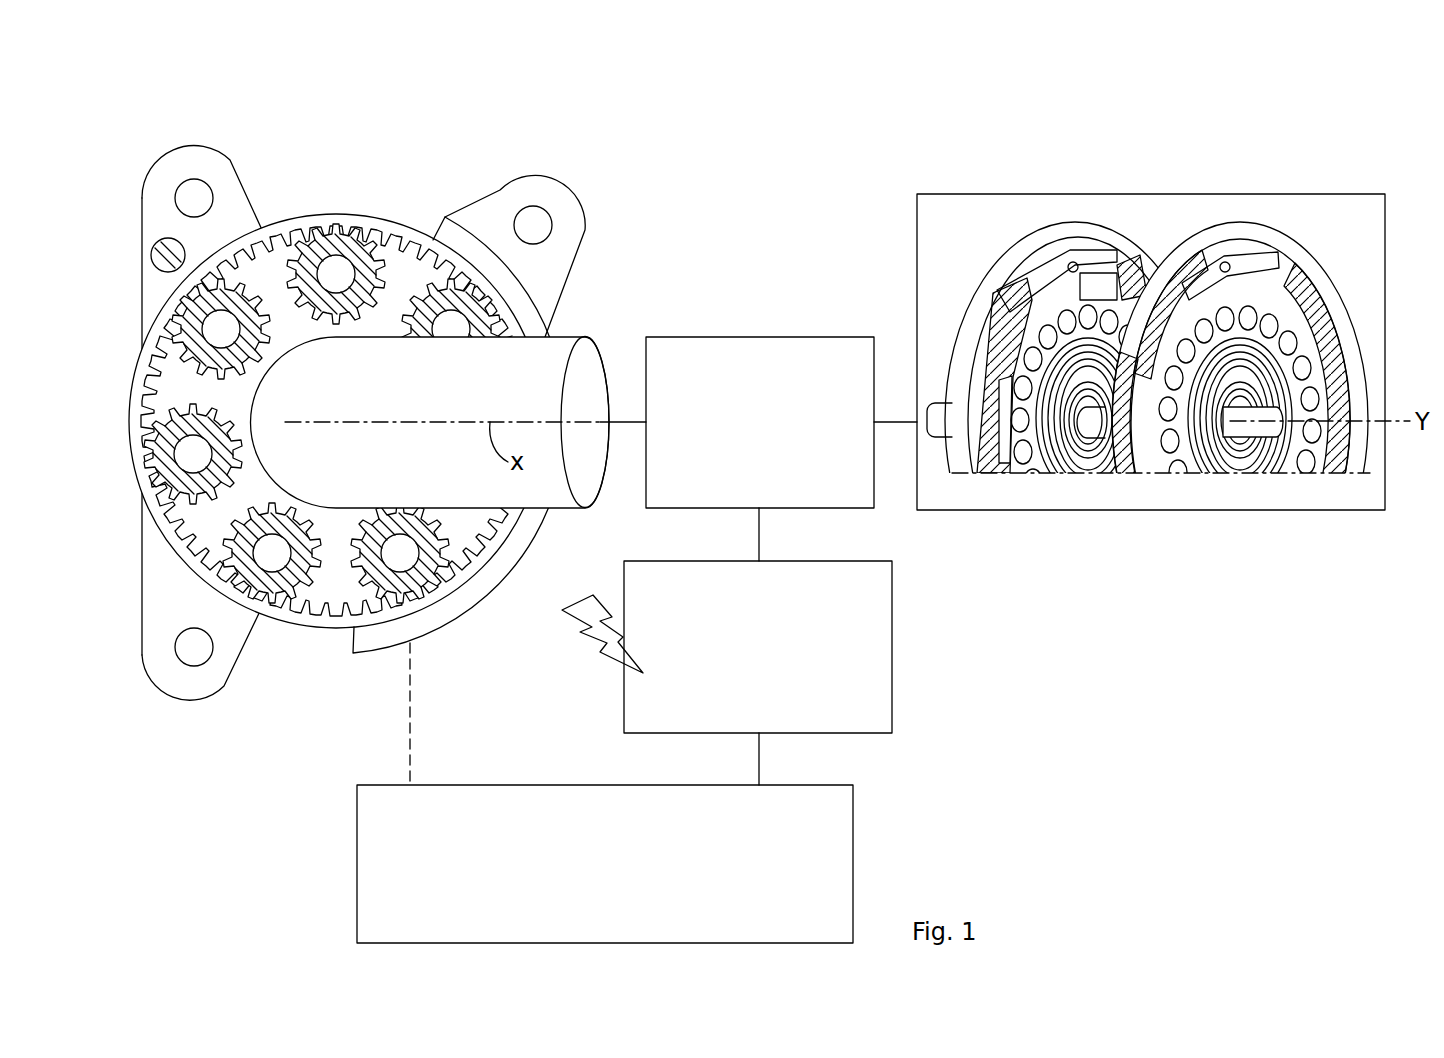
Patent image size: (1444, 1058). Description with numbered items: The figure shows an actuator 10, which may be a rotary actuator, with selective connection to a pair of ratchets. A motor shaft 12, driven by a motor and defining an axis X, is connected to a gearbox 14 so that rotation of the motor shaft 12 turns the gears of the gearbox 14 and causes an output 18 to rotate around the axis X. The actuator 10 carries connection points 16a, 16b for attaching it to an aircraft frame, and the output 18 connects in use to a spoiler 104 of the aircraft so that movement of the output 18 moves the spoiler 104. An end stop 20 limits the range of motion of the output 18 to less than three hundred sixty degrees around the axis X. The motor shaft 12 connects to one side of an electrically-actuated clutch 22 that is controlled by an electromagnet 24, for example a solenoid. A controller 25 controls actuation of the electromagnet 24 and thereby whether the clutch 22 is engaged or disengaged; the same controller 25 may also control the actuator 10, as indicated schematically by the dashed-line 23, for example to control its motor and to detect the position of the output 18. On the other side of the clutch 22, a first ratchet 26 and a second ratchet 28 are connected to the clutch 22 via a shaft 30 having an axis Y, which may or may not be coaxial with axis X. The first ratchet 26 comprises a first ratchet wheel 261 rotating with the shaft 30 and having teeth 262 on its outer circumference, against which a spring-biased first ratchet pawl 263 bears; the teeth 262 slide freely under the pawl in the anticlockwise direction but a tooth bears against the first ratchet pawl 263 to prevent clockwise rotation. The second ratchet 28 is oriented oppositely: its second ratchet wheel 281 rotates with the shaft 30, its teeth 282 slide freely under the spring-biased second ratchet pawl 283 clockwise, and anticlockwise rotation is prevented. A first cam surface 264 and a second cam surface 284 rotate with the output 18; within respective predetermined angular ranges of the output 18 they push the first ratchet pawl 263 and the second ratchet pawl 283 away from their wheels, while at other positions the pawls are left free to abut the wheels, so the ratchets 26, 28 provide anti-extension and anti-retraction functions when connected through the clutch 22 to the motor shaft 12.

The actuator 10 is at (175, 100).
The motor shaft 12 is at (353, 480).
The gearbox 14 is at (350, 250).
The connection point 16a is at (198, 192).
The connection point 16b is at (193, 655).
The output 18 is at (533, 220).
The end stop 20 is at (153, 246).
The spoiler 104 is at (533, 222).
The electrically-actuated clutch 22 is at (775, 432).
The dashed-line 23 is at (412, 700).
The electromagnet 24 is at (771, 659).
The controller 25 is at (620, 875).
The first ratchet 26 is at (1028, 369).
The second ratchet 28 is at (1278, 369).
The shaft 30 is at (1247, 435).
The first ratchet wheel 261 is at (1033, 272).
The teeth 262 is at (1082, 270).
The first ratchet pawl 263 is at (1112, 272).
The first cam surface 264 is at (1003, 252).
The second ratchet wheel 281 is at (1270, 272).
The teeth 282 is at (1245, 275).
The second ratchet pawl 283 is at (1212, 272).
The second cam surface 284 is at (1338, 257).